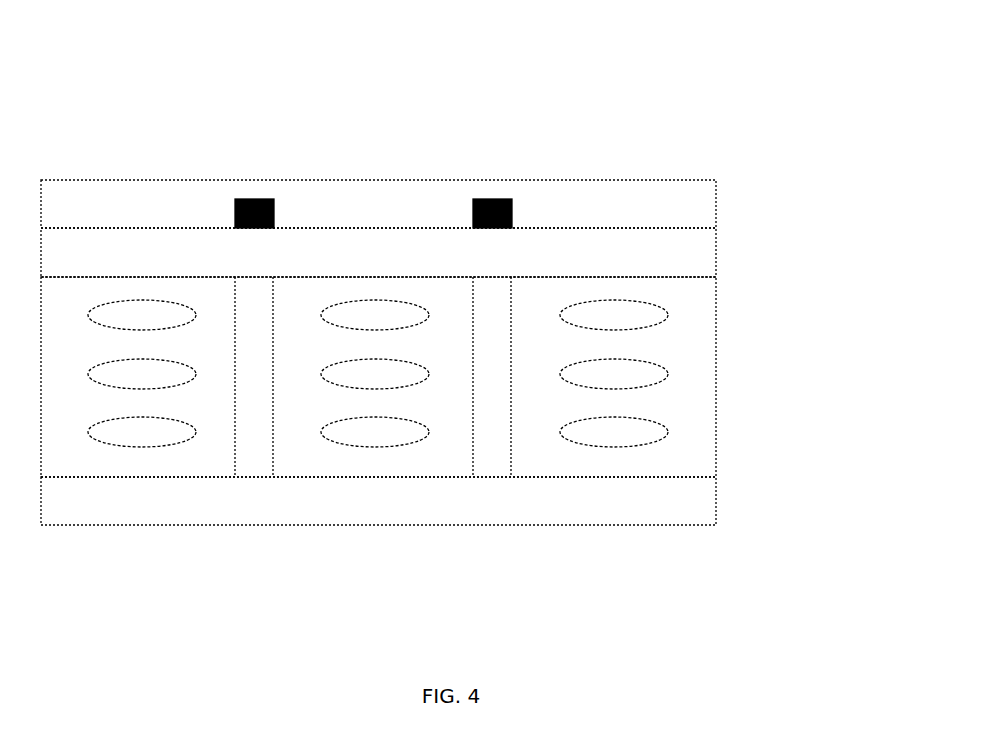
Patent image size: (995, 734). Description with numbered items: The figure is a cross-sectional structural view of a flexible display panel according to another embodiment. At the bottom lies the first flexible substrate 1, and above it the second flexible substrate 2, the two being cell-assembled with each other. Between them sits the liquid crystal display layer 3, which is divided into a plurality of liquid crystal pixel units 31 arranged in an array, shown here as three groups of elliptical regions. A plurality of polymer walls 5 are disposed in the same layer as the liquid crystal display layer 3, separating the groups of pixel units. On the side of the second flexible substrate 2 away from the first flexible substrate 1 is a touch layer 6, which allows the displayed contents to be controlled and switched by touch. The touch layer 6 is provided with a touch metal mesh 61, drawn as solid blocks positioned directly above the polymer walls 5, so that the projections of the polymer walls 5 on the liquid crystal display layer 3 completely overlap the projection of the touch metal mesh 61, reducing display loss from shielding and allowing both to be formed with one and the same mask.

The first flexible substrate 1 is at (690, 503).
The second flexible substrate 2 is at (690, 255).
The liquid crystal display layer 3 is at (690, 375).
The liquid crystal pixel units 31 is at (108, 458).
The polymer walls 5 is at (250, 458).
The touch layer 6 is at (690, 190).
The touch metal mesh 61 is at (243, 199).